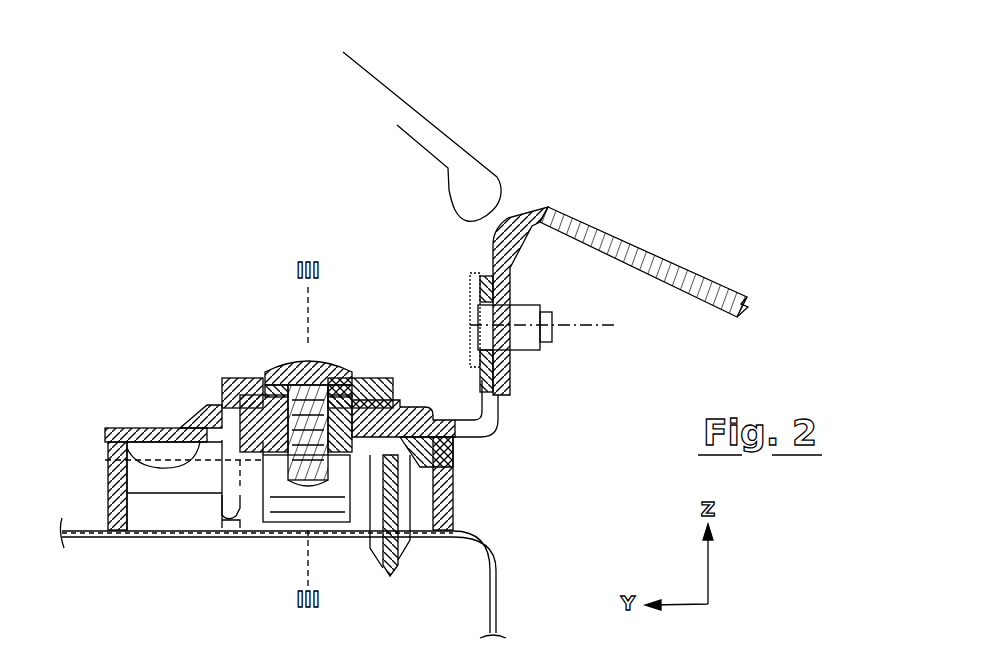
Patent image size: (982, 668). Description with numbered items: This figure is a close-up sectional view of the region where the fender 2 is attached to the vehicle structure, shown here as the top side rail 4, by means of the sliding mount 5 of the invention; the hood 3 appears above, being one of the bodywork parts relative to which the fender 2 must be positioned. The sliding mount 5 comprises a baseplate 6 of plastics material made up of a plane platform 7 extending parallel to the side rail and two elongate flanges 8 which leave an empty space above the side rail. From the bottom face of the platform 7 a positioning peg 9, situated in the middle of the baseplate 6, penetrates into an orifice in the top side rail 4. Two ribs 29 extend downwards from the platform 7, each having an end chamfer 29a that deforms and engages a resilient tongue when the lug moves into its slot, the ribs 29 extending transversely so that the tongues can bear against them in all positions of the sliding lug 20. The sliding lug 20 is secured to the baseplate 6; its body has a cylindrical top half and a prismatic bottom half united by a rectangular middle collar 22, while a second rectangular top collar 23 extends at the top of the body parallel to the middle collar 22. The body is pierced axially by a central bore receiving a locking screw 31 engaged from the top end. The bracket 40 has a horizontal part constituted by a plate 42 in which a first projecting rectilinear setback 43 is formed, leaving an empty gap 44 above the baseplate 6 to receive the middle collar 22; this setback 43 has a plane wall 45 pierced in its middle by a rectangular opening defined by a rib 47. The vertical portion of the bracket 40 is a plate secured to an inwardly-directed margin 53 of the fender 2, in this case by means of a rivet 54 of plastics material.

The fender 2 is at (636, 262).
The hood 3 is at (430, 132).
The top side rail 4 is at (468, 600).
The sliding mount 5 is at (178, 280).
The baseplate 6 is at (476, 485).
The platform 7 is at (455, 458).
The elongate flanges 8 is at (105, 497).
The positioning peg 9 is at (408, 545).
The sliding lug 20 is at (296, 348).
The middle collar 22 is at (205, 404).
The top collar 23 is at (230, 378).
The ribs 29 is at (218, 505).
The end chamfer 29a is at (225, 500).
The locking screw 31 is at (315, 385).
The bracket 40 is at (508, 411).
The plate 42 is at (122, 428).
The first setback 43 is at (208, 397).
The gap 44 is at (108, 456).
The plane wall 45 is at (400, 390).
The rib 47 is at (275, 382).
The inwardly-directed margin 53 is at (512, 287).
The rivet 54 is at (520, 343).